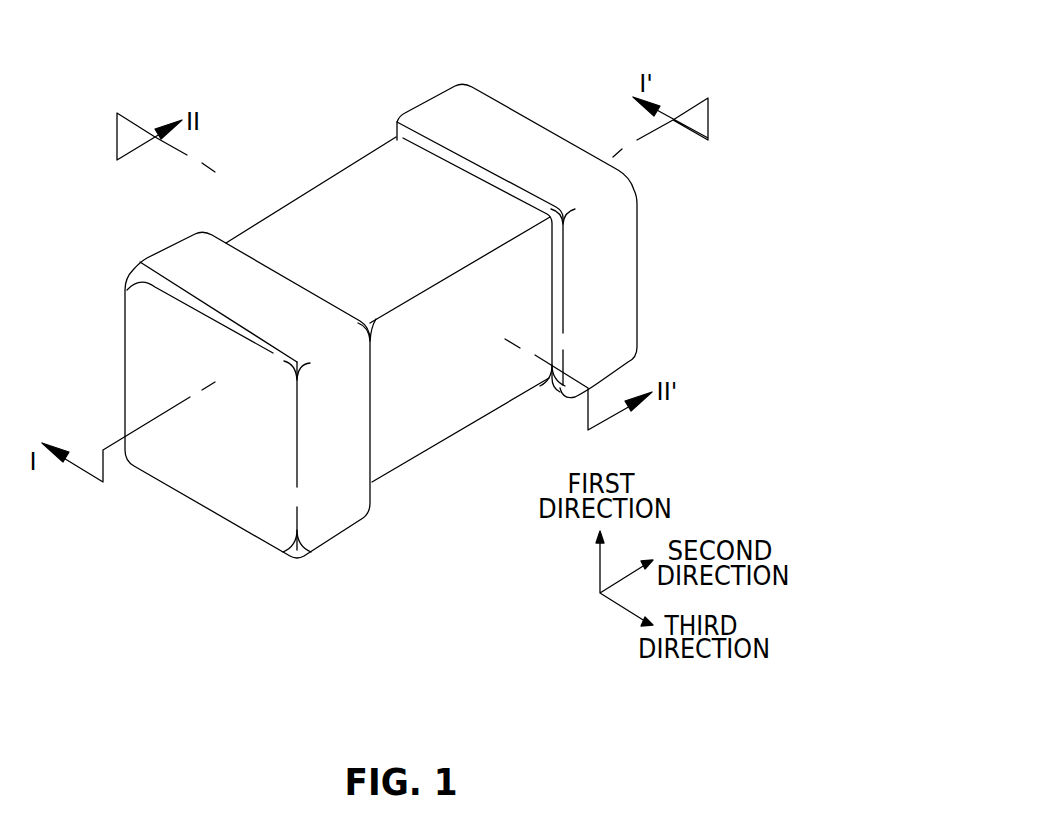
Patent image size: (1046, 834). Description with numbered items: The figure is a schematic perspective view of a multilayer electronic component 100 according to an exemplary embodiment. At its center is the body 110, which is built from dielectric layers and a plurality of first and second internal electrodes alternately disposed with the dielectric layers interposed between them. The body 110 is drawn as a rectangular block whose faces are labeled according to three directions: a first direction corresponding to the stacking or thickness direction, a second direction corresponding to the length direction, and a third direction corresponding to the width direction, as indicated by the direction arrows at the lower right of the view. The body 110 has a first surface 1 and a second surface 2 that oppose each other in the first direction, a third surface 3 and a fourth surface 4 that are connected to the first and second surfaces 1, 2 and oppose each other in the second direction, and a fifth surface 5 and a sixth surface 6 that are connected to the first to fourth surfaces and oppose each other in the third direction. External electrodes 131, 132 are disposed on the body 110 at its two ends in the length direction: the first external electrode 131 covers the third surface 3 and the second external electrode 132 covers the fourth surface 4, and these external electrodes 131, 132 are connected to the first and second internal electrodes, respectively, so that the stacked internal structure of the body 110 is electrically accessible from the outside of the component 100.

The multilayer electronic component 100 is at (103, 52).
The body 110 is at (290, 228).
The first external electrode 131 is at (187, 262).
The second external electrode 132 is at (438, 118).
The first surface 1 is at (427, 398).
The second surface 2 is at (398, 201).
The third surface 3 is at (218, 447).
The fourth surface 4 is at (584, 254).
The fifth surface 5 is at (475, 371).
The sixth surface 6 is at (345, 219).